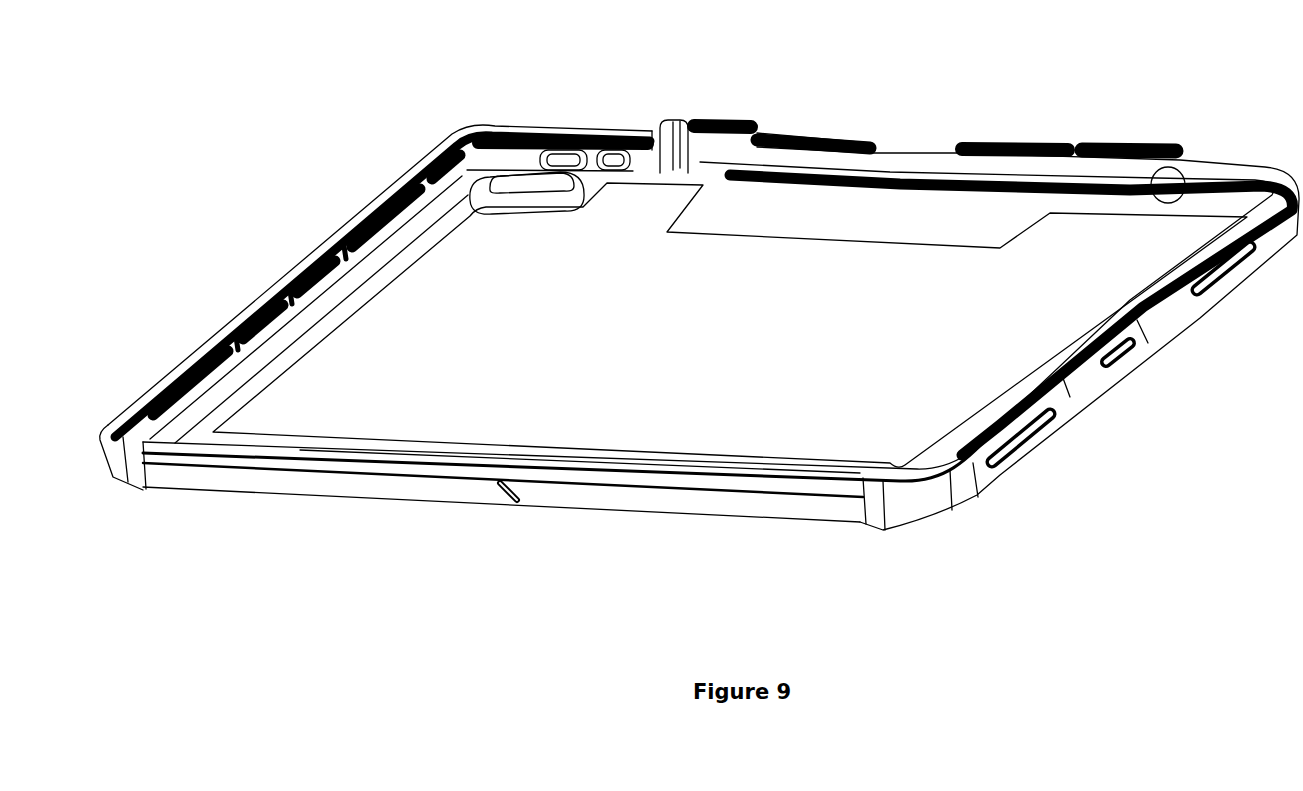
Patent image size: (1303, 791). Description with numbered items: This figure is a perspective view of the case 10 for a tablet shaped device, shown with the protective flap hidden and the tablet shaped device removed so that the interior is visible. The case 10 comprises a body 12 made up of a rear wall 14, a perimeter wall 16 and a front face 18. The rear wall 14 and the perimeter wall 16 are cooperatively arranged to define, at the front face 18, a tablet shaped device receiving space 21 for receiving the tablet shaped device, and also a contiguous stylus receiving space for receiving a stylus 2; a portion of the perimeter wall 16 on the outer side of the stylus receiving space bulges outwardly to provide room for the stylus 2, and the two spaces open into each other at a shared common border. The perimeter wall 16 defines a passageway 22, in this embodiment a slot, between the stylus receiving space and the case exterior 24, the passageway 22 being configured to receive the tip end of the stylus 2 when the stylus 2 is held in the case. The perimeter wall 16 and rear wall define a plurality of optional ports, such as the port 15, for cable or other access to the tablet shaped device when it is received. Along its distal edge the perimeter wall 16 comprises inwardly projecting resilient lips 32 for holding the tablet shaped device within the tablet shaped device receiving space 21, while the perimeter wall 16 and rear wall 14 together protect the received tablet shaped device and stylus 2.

The stylus 2 is at (919, 160).
The case 10 is at (313, 257).
The body 12 is at (285, 443).
The rear wall 14 is at (785, 432).
The port 15 is at (1043, 437).
The perimeter wall 16 is at (402, 490).
The front face 18 is at (737, 369).
The tablet shaped device receiving space 21 is at (602, 403).
The passageway 22 is at (655, 132).
The case exterior 24 is at (332, 611).
The resilient lip 32 is at (343, 233).